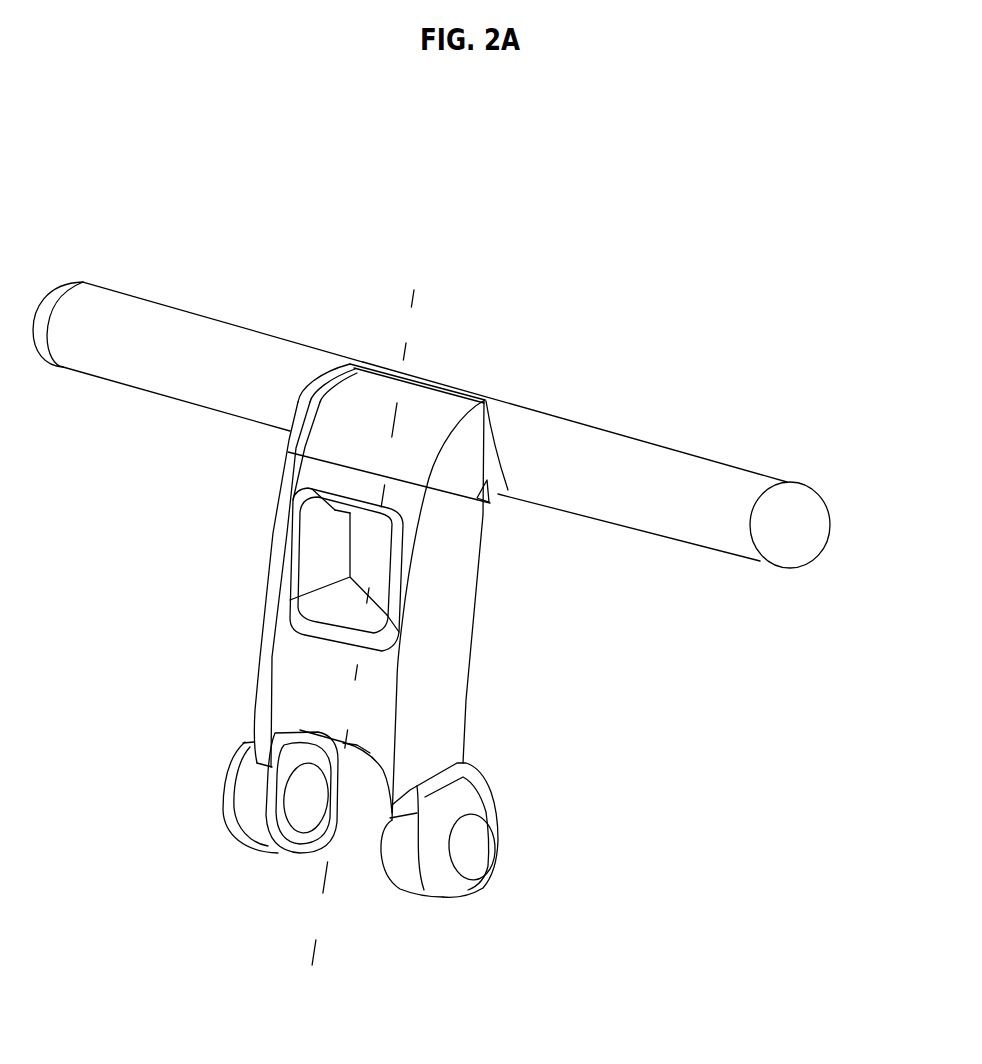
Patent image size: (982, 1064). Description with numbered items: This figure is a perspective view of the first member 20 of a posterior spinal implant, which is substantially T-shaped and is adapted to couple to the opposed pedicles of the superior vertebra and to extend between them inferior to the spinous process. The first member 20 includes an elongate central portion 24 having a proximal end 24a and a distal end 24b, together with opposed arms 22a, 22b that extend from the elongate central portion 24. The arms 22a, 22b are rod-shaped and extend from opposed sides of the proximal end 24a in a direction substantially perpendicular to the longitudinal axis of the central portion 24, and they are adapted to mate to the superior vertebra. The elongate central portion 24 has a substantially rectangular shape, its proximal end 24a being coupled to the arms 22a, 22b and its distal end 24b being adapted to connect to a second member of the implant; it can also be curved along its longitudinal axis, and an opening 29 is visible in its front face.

The first member 20 is at (720, 168).
The arm 22a is at (660, 493).
The arm 22b is at (190, 358).
The elongate central portion 24 is at (373, 658).
The proximal end 24a is at (456, 368).
The distal end 24b is at (432, 924).
The opening 29 is at (348, 562).